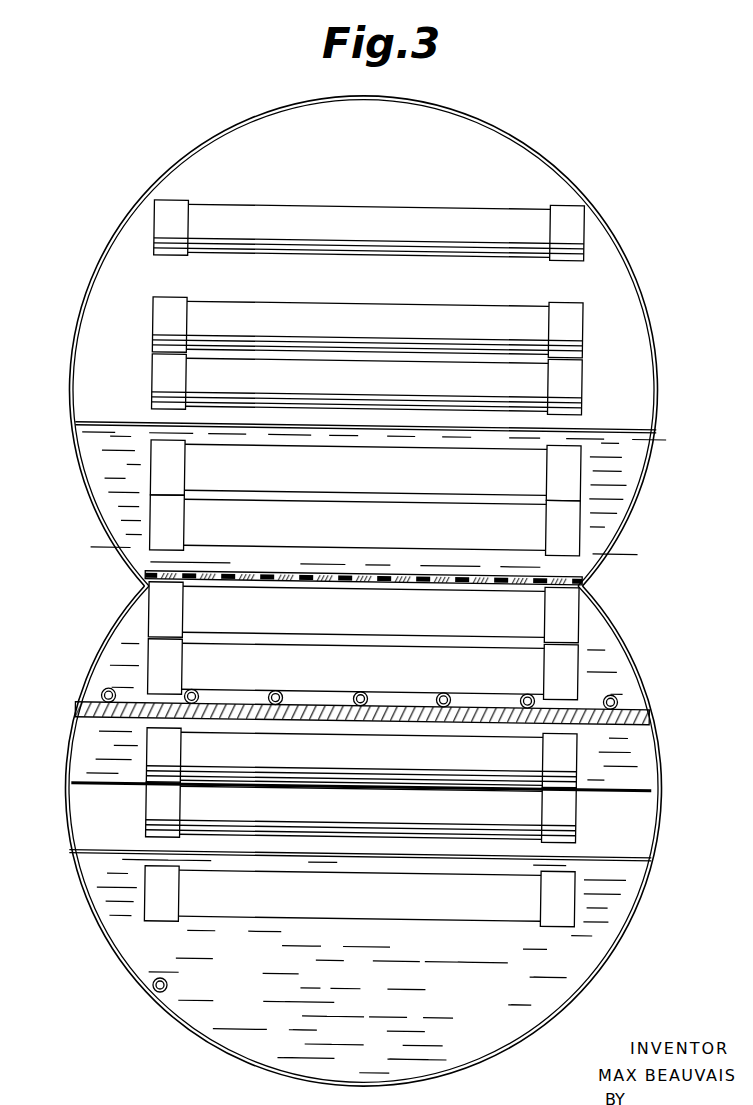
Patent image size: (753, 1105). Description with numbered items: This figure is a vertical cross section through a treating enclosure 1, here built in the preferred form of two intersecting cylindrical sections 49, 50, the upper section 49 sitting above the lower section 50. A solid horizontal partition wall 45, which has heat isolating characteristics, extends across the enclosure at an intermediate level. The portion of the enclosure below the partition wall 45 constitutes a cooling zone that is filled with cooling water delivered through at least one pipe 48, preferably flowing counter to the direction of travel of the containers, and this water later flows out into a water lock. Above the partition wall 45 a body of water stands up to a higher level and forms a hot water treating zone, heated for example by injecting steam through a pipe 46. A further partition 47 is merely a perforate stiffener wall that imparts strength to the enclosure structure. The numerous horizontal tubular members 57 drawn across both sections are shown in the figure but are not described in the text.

The treating enclosure 1 is at (492, 133).
The upper cylindrical section 49 is at (663, 357).
The lower cylindrical section 50 is at (633, 886).
The tubes 57 is at (285, 218).
The perforate stiffener wall 47 is at (413, 573).
The horizontal partition wall 45 is at (384, 712).
The steam injection pipe 46 is at (103, 692).
The cooling water pipe 48 is at (152, 993).